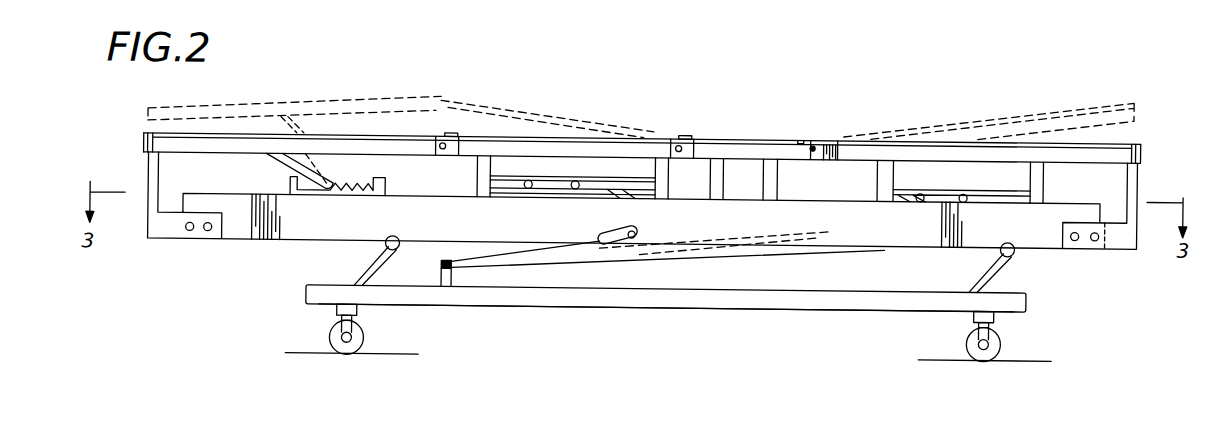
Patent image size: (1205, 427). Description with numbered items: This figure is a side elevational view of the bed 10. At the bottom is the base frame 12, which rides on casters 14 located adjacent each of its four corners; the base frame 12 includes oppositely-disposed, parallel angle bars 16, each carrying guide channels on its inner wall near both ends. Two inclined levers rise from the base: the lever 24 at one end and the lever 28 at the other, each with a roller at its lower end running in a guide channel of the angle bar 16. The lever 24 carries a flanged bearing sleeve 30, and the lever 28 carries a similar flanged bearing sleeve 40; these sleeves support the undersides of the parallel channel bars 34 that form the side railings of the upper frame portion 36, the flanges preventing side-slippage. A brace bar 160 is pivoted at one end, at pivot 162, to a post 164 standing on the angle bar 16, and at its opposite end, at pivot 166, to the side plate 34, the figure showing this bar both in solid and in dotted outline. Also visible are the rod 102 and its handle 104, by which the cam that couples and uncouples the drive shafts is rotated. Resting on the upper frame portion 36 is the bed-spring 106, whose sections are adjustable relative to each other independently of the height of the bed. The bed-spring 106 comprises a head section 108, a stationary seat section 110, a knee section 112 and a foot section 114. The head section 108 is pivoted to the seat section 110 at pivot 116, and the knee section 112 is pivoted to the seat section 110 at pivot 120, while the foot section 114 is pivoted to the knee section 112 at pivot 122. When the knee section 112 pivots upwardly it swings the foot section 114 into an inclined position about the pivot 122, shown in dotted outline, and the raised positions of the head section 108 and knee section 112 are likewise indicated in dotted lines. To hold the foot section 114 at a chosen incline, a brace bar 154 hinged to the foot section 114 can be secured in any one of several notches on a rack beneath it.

The bed 10 is at (742, 113).
The base frame 12 is at (774, 312).
The casters 14 is at (366, 335).
The angle bars 16 is at (700, 297).
The lever 24 is at (985, 260).
The lever 28 is at (372, 265).
The bearing sleeve 30 is at (1015, 243).
The channel bars 34 is at (870, 237).
The upper frame portion 36 is at (290, 241).
The bearing sleeve 40 is at (394, 253).
The rod 102 is at (635, 227).
The handle 104 is at (608, 225).
The bed-spring 106 is at (873, 119).
The head section 108 is at (1027, 103).
The seat section 110 is at (768, 131).
The knee section 112 is at (500, 129).
The foot section 114 is at (310, 98).
The pivot 116 is at (812, 141).
The pivot 120 is at (678, 139).
The pivot 122 is at (441, 139).
The brace bar 154 is at (283, 162).
The brace bar 160 is at (590, 247).
The pivot 162 is at (448, 257).
The post 164 is at (452, 274).
The pivot 166 is at (828, 222).